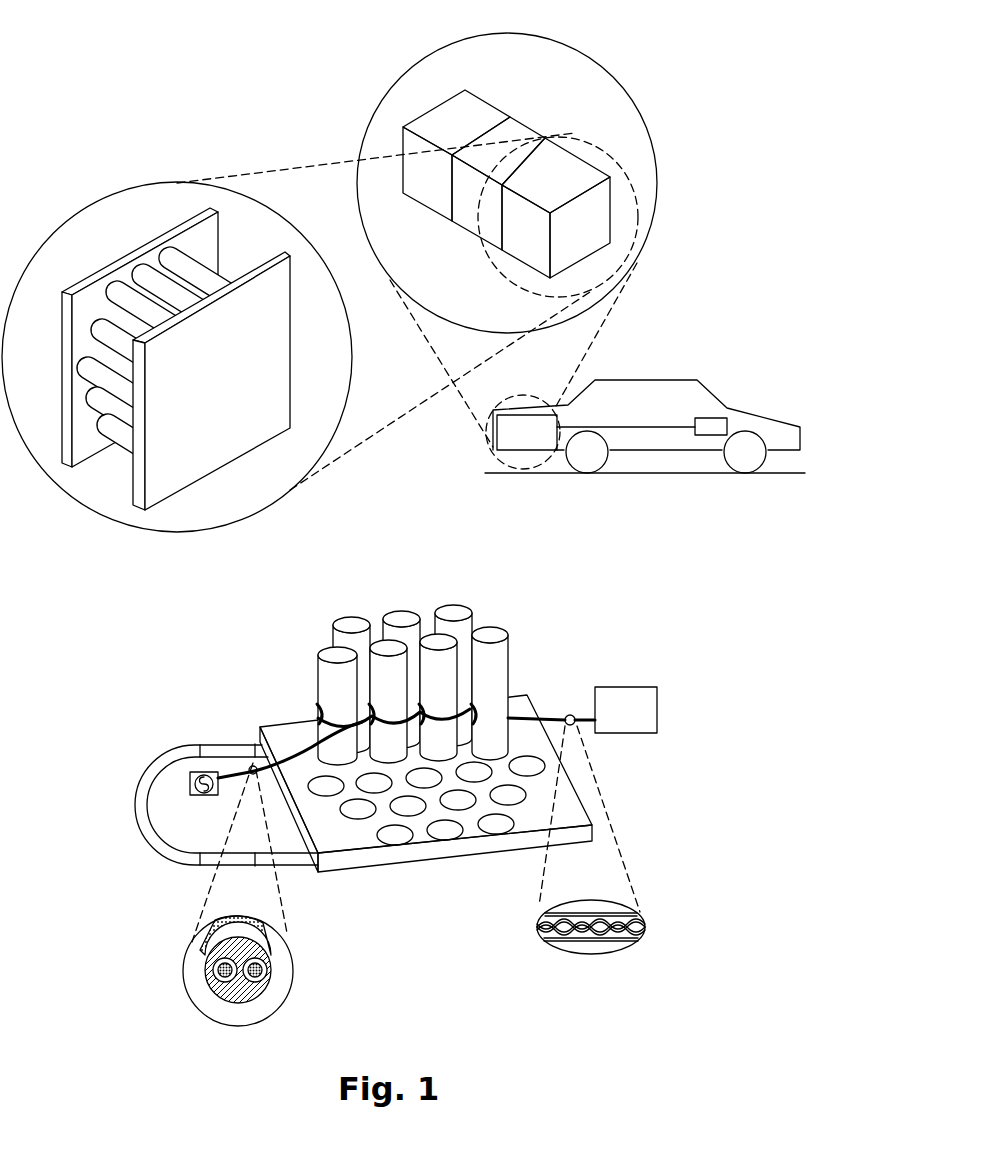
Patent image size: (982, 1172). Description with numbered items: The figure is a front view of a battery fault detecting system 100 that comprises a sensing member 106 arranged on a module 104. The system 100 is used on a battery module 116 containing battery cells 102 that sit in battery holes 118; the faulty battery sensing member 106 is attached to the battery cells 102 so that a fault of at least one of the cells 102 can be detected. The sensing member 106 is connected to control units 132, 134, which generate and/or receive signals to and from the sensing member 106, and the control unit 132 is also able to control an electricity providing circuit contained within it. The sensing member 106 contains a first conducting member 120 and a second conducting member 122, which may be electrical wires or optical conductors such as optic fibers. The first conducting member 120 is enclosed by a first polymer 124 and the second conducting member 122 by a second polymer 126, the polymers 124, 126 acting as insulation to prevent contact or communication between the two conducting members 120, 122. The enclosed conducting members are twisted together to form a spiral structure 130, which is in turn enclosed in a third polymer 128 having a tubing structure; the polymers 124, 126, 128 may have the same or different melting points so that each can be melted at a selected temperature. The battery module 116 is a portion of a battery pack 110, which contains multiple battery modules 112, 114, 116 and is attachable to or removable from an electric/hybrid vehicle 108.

The battery fault detecting system 100 is at (90, 46).
The battery cells 102 is at (352, 622).
The module 104 is at (430, 876).
The sensing member 106 is at (557, 717).
The electric/hybrid vehicle 108 is at (668, 408).
The battery pack 110 is at (390, 84).
The battery module 112 is at (492, 113).
The battery module 114 is at (537, 133).
The battery module 116 is at (580, 163).
The battery holes 118 is at (528, 766).
The first conducting member 120 is at (223, 978).
The second conducting member 122 is at (260, 977).
The first polymer 124 is at (207, 965).
The second polymer 126 is at (262, 962).
The third polymer 128 is at (213, 934).
The spiral structure 130 is at (565, 927).
The control unit 132 is at (644, 721).
The control unit 134 is at (213, 802).